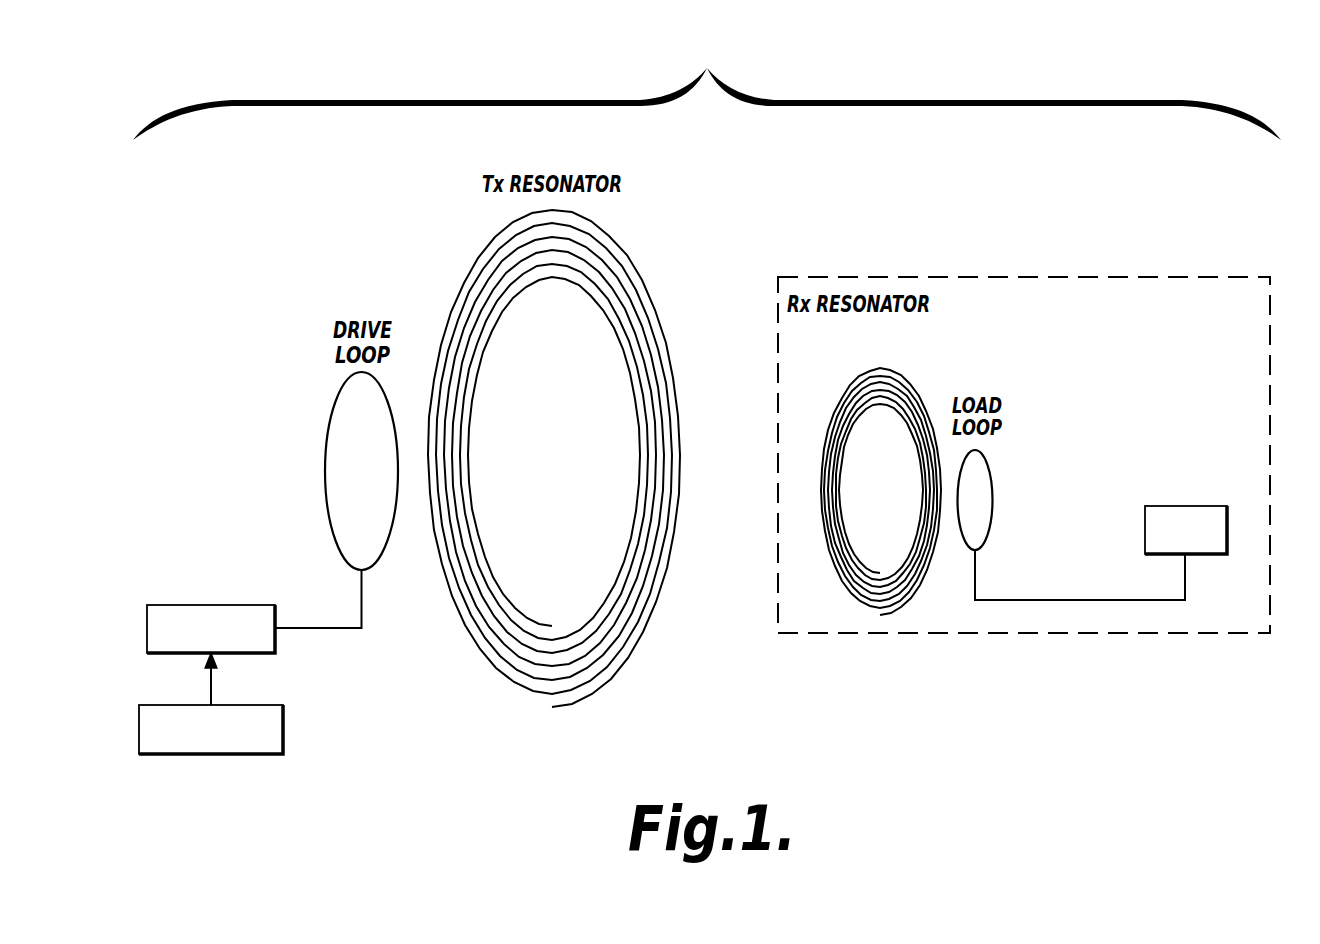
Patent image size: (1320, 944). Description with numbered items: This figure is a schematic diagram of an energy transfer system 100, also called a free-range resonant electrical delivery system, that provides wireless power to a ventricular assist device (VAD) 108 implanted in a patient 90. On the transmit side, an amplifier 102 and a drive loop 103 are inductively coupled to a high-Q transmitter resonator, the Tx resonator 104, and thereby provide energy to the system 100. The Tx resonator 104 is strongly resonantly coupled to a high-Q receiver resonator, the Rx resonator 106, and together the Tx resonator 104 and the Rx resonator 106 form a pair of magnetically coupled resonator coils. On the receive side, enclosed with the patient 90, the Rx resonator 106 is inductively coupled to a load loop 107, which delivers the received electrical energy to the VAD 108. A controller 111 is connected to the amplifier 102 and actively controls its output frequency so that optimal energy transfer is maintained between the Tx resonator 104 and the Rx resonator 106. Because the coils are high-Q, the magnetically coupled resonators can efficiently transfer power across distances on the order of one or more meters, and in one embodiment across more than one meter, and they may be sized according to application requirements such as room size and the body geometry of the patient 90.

The energy transfer system 100 is at (707, 90).
The amplifier 102 is at (190, 605).
The drive loop 103 is at (329, 440).
The Tx resonator 104 is at (487, 256).
The Rx resonator 106 is at (906, 384).
The load loop 107 is at (992, 478).
The ventricular assist device 108 is at (1198, 506).
The controller 111 is at (150, 705).
The patient 90 is at (1232, 277).